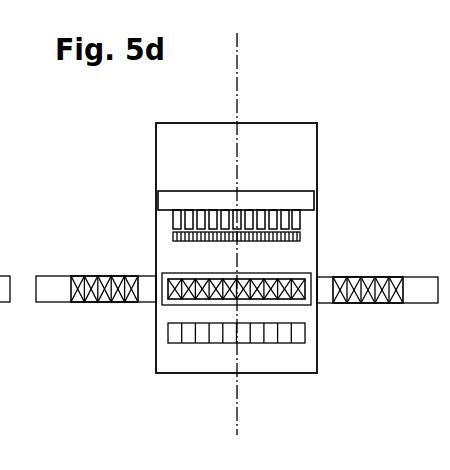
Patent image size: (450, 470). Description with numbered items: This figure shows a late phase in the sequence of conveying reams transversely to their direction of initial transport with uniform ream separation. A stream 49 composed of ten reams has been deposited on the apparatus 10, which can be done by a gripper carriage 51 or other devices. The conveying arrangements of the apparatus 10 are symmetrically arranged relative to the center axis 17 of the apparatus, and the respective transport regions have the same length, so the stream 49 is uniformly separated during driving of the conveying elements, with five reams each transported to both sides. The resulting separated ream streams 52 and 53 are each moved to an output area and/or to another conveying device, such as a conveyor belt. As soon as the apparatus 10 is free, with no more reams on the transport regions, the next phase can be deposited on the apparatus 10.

The apparatus 10 is at (197, 303).
The center axis 17 is at (237, 77).
The stream 49 is at (272, 297).
The gripper carriage 51 is at (280, 222).
The separated ream stream 52 is at (372, 303).
The separated ream stream 53 is at (100, 302).